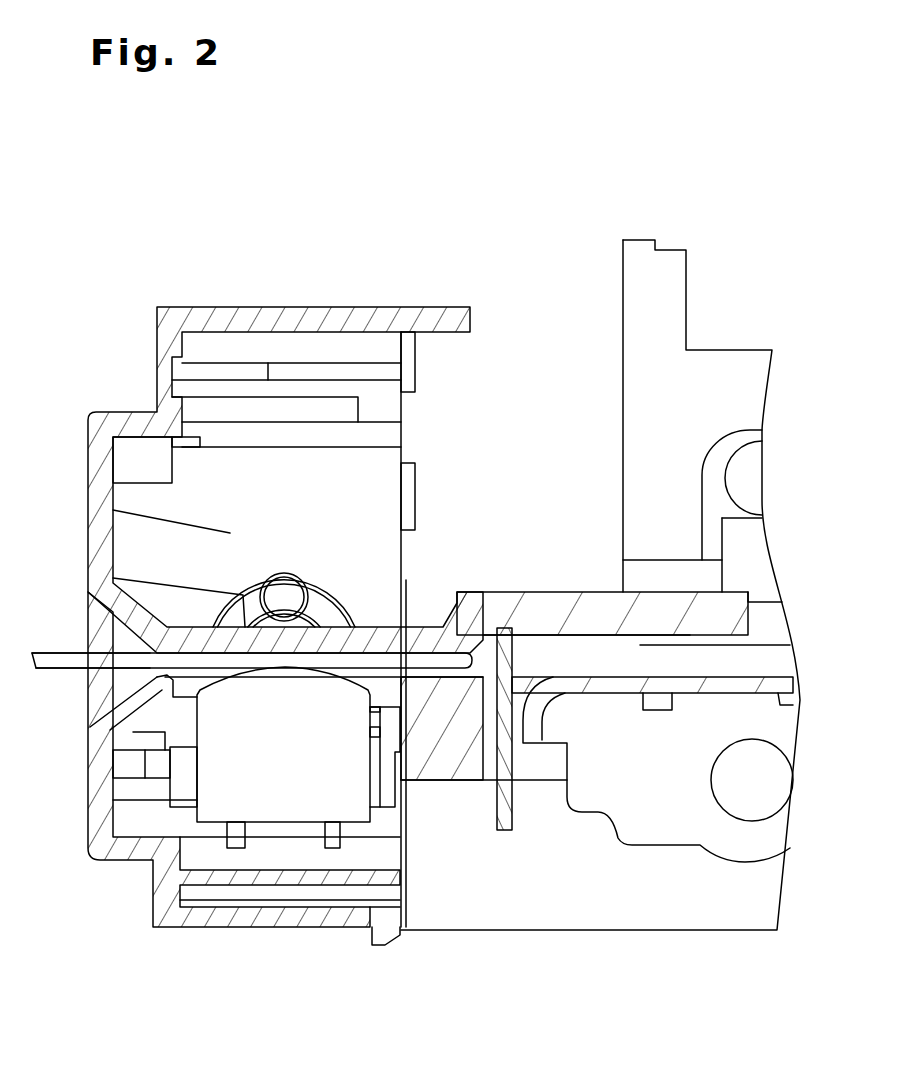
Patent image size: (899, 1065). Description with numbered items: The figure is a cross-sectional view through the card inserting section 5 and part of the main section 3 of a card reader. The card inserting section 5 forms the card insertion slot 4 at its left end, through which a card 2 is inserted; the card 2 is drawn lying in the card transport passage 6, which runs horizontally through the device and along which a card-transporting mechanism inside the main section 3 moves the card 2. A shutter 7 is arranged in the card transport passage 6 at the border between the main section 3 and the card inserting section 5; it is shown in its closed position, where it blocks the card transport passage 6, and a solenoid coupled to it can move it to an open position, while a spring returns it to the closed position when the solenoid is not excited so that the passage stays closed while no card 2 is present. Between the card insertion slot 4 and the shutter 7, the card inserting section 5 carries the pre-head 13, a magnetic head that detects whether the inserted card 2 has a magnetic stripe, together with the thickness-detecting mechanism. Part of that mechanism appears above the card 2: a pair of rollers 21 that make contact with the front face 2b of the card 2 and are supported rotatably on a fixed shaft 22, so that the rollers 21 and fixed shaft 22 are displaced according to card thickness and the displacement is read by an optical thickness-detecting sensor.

The card 2 is at (252, 635).
The front face of the card 2b is at (60, 652).
The main section 3 is at (727, 350).
The card insertion slot 4 is at (88, 702).
The card inserting section 5 is at (285, 307).
The card transport passage 6 is at (588, 652).
The shutter 7 is at (503, 833).
The pre-head 13 is at (288, 822).
The rollers 21 is at (279, 521).
The fixed shaft 22 is at (292, 577).